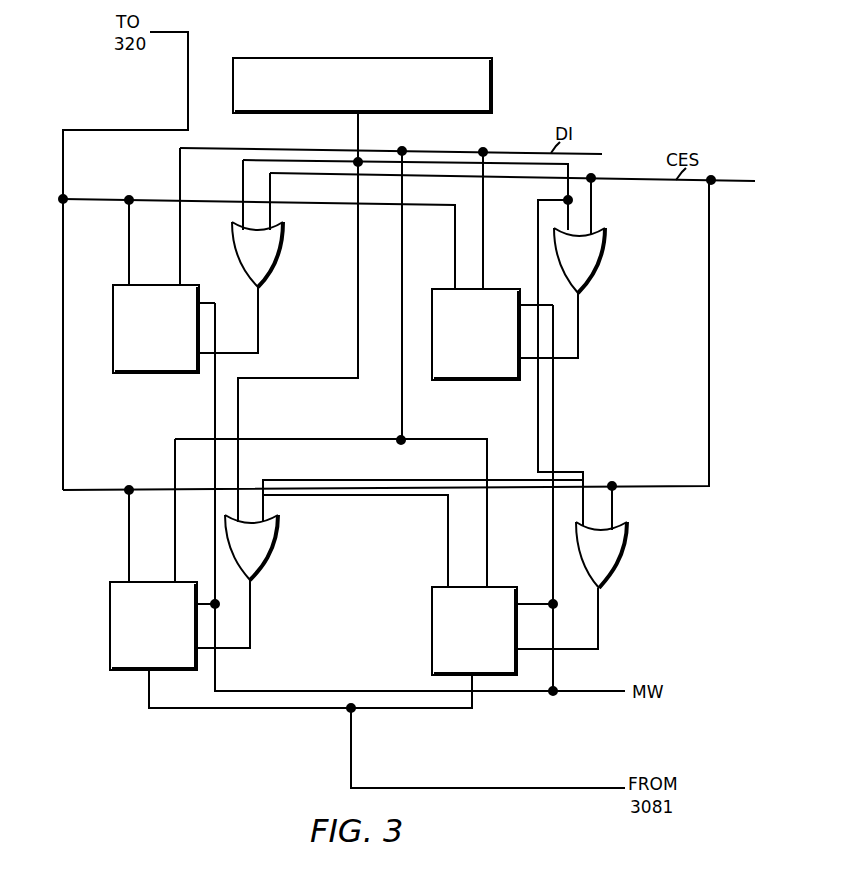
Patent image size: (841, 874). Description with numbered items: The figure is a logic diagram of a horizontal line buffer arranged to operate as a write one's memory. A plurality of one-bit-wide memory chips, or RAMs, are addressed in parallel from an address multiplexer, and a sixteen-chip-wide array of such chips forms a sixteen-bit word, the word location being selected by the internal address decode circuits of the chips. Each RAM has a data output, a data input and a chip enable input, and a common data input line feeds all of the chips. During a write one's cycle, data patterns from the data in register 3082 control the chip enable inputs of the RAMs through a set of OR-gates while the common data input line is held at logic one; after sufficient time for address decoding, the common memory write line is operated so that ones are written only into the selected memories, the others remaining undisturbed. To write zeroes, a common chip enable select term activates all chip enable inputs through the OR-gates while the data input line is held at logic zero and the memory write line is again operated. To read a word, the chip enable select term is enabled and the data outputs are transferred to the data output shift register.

The register 3082 is at (397, 73).